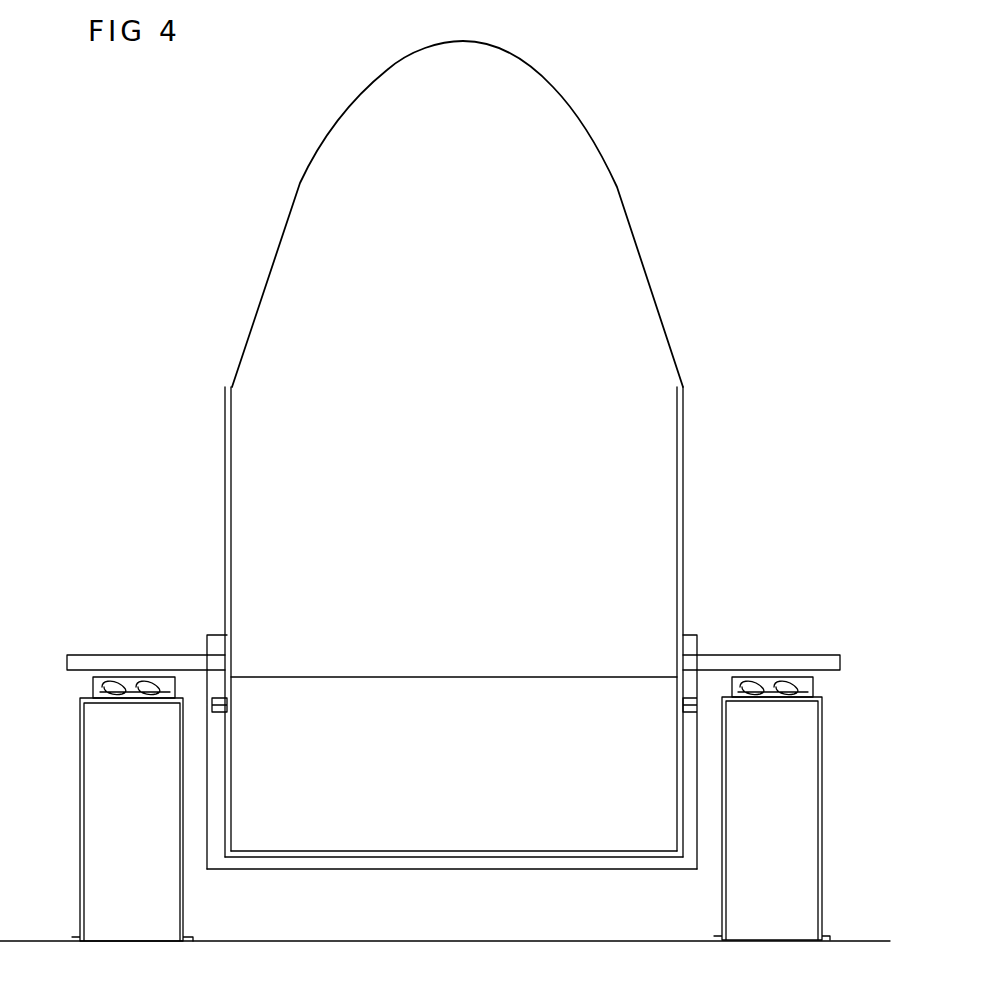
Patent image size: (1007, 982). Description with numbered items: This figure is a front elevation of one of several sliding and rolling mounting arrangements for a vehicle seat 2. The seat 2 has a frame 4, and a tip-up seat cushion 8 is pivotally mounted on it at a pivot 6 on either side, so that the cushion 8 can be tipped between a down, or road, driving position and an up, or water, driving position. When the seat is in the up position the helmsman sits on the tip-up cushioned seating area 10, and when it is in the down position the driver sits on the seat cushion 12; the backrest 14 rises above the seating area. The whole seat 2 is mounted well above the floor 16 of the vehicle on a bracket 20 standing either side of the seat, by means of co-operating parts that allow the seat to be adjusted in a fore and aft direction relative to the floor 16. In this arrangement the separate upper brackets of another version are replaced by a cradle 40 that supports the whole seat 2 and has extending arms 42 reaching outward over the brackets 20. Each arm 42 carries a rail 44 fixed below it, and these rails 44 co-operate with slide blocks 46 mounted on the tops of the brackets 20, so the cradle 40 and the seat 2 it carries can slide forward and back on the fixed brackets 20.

The seat 2 is at (672, 240).
The frame 4 is at (687, 490).
The pivot 6 is at (237, 677).
The tip-up seat cushion 8 is at (241, 857).
The tip-up cushioned seating area 10 is at (475, 788).
The seat cushion 12 is at (473, 677).
The backrest 14 is at (462, 427).
The floor 16 is at (343, 940).
The bracket 20 is at (83, 807).
The cradle 40 is at (499, 863).
The extending arm 42 is at (162, 662).
The rail 44 is at (147, 703).
The slide block 46 is at (112, 683).